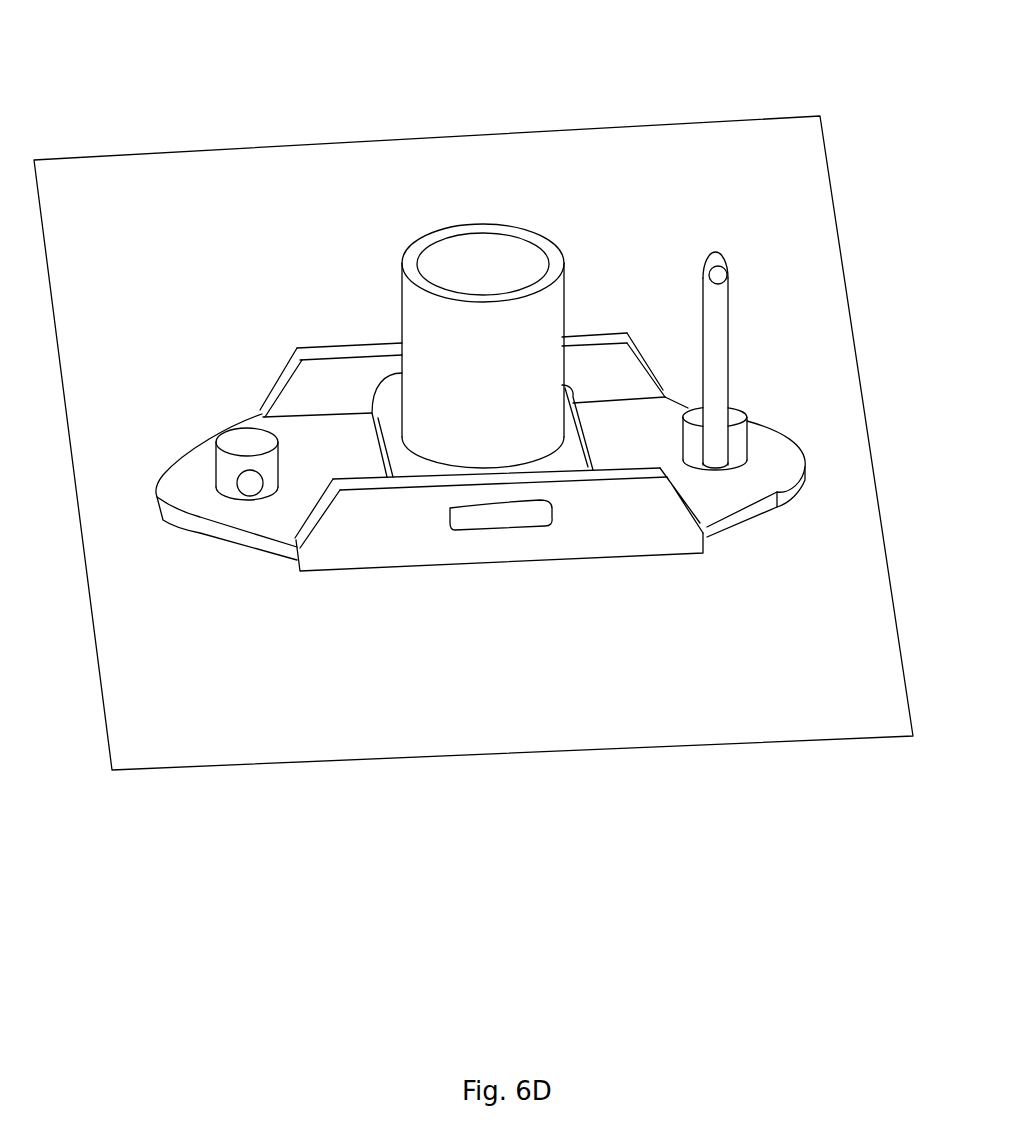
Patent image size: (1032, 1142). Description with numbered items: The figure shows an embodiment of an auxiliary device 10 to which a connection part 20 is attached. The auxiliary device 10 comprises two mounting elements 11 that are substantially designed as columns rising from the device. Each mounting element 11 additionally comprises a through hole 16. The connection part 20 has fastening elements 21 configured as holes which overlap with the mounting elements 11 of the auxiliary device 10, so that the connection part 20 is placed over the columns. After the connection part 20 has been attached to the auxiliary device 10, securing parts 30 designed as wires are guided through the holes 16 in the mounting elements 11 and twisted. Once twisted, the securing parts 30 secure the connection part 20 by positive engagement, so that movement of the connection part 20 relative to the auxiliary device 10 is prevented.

The auxiliary device 10 is at (190, 248).
The mounting element 11 is at (222, 465).
The through hole 16 is at (258, 483).
The connection part 20 is at (582, 268).
The fastening element 21 is at (745, 482).
The securing part 30 is at (713, 336).